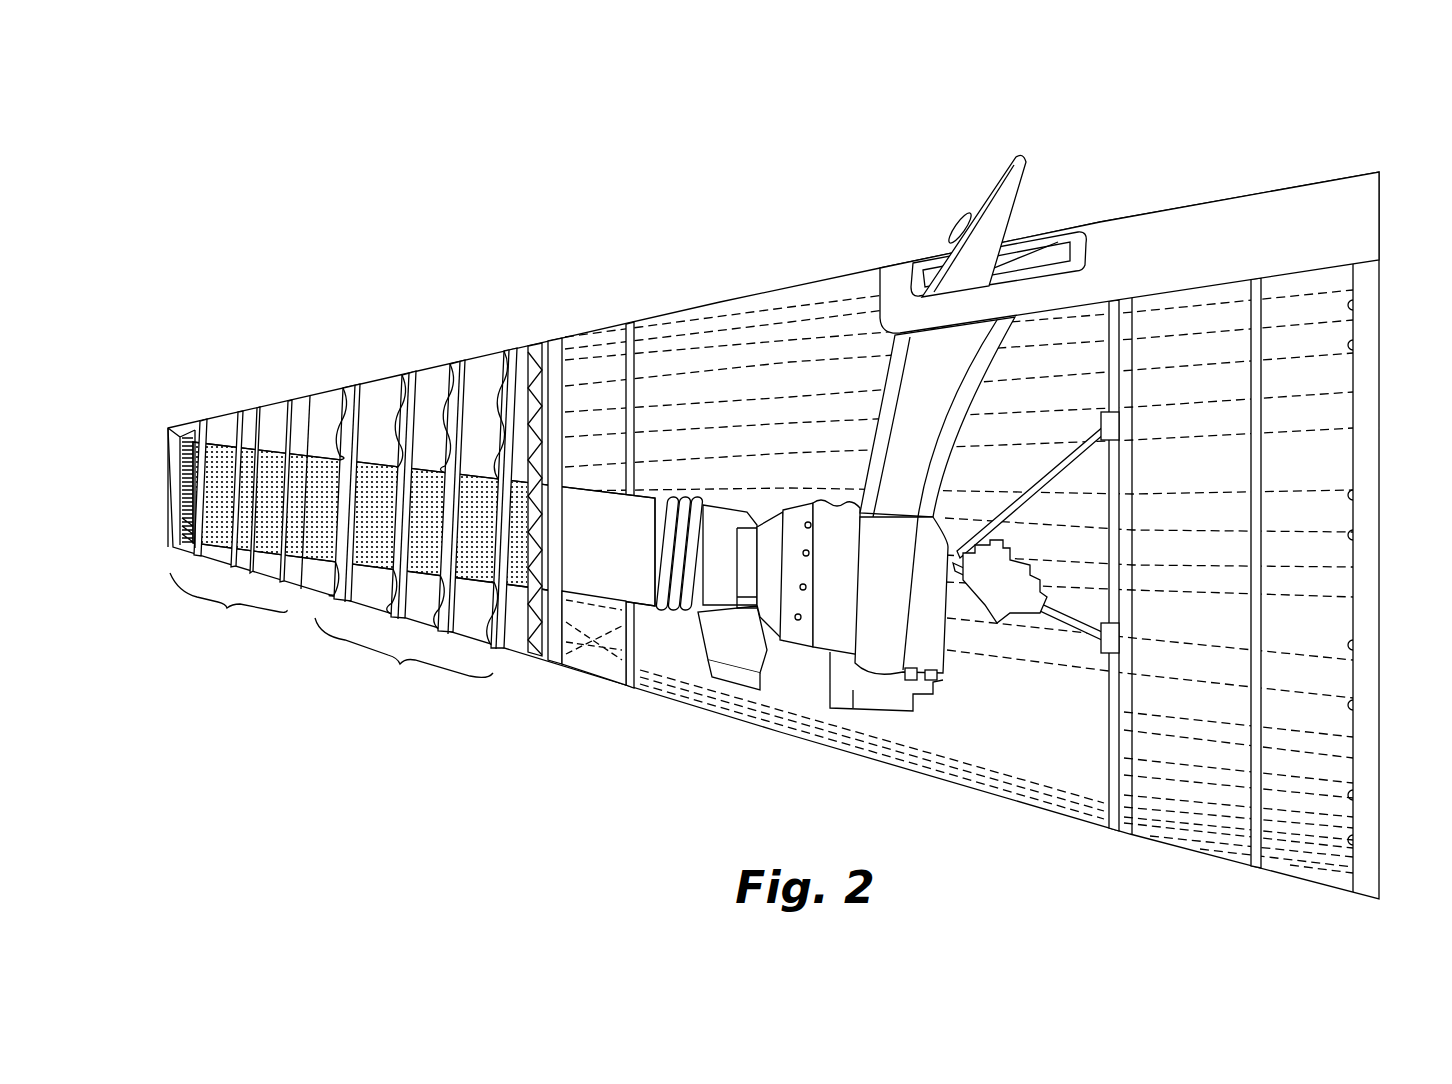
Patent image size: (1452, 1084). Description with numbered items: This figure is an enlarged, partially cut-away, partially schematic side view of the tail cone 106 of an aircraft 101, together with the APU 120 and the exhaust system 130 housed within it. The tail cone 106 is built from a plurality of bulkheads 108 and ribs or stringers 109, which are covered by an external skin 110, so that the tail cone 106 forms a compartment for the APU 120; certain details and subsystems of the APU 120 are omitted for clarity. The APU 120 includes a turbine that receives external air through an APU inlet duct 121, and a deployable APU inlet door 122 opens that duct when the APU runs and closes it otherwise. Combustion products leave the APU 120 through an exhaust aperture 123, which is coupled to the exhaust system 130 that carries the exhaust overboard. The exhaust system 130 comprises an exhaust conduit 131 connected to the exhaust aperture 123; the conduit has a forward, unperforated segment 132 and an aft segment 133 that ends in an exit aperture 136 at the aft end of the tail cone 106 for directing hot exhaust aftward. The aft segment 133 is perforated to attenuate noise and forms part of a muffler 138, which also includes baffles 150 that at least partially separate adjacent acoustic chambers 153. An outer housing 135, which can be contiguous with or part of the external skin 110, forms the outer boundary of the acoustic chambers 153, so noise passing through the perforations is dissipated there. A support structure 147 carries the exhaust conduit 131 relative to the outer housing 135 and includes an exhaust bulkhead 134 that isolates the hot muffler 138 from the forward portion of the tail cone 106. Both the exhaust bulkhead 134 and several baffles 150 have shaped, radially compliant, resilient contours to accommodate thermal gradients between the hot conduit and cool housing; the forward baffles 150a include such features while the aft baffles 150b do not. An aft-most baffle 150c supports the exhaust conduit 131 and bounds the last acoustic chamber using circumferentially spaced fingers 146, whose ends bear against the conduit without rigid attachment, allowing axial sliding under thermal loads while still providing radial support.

The aircraft 101 is at (1218, 167).
The tail cone 106 is at (710, 215).
The bulkheads 108 is at (1370, 300).
The ribs or stringers 109 is at (1300, 350).
The external skin 110 is at (1250, 216).
The APU 120 is at (817, 500).
The APU inlet duct 121 is at (973, 397).
The deployable APU inlet door 122 is at (996, 190).
The exhaust aperture 123 is at (697, 613).
The exhaust system 130 is at (455, 307).
The exhaust conduit 131 is at (507, 591).
The forward, unperforated segment 132 is at (578, 600).
The aft segment 133 is at (306, 562).
The exhaust bulkhead 134 is at (552, 400).
The outer housing 135 is at (300, 392).
The exit aperture 136 is at (168, 455).
The muffler 138 is at (440, 388).
The fingers 146 is at (172, 547).
The support structure 147 is at (565, 419).
The baffles 150 is at (331, 667).
The forward baffles 150a is at (400, 665).
The aft baffles 150b is at (227, 608).
The aft-most baffle 150c is at (180, 497).
The acoustic chambers 153 is at (333, 405).